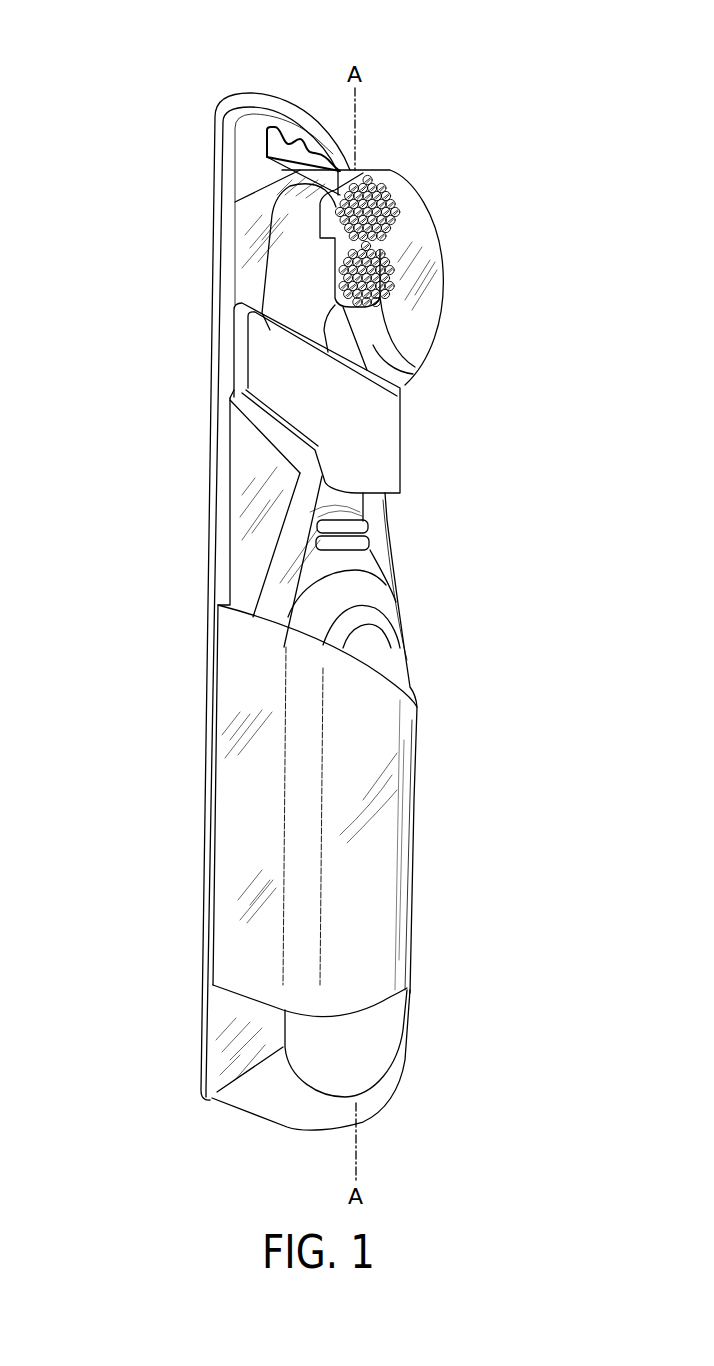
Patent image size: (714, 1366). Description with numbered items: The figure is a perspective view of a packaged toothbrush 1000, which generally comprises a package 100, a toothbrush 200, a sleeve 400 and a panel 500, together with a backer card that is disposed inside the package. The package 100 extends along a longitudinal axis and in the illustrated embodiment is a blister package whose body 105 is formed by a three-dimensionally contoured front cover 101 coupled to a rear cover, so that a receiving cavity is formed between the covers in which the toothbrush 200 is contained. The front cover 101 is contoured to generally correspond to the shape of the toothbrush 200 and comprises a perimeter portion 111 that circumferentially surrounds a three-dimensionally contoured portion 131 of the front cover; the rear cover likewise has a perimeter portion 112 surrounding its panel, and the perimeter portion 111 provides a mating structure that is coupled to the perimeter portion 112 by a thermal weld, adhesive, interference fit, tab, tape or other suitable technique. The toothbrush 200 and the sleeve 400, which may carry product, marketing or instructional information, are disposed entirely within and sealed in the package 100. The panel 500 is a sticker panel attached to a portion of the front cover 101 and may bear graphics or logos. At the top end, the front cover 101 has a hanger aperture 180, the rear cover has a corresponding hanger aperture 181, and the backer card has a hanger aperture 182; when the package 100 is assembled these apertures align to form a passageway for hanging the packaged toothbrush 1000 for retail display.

The packaged toothbrush 1000 is at (318, 590).
The perimeter portion of the front cover 111 is at (196, 589).
The perimeter portion of the rear cover 112 is at (215, 125).
The hanger aperture of the front cover 180 is at (233, 90).
The hanger aperture of the rear cover 181 is at (233, 90).
The hanger aperture of the backer card 182 is at (303, 148).
The three-dimensionally contoured portion of the front cover 131 is at (421, 390).
The panel 500 is at (372, 455).
The toothbrush 200 is at (381, 583).
The sleeve 400 is at (383, 703).
The package 100 is at (375, 831).
The body 105 is at (375, 831).
The front cover 101 is at (247, 1112).